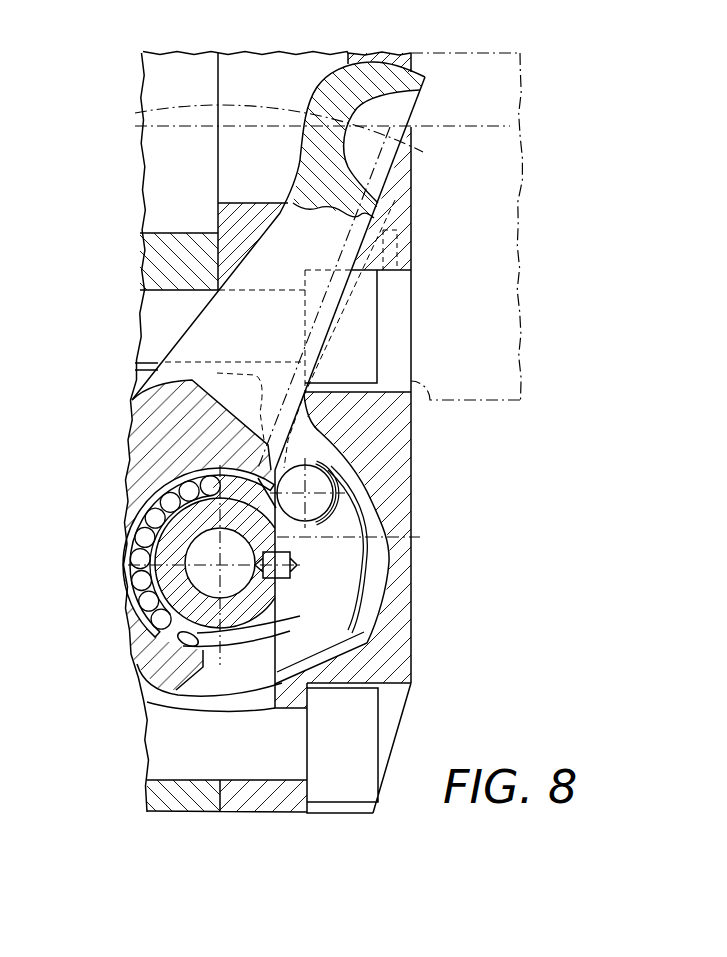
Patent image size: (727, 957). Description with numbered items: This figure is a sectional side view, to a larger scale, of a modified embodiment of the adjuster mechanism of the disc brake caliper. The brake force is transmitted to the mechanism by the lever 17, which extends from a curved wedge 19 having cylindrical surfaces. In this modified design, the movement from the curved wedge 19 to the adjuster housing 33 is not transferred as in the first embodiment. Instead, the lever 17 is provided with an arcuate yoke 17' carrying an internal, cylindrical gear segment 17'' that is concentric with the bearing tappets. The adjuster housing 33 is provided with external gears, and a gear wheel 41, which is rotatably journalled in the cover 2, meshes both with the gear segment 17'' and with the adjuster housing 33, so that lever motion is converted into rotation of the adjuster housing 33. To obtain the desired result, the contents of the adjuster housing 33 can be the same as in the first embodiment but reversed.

The cover 2 is at (411, 457).
The lever 17 is at (248, 266).
The curved wedge 19 is at (158, 470).
The gear wheel 41 is at (413, 492).
The arcuate yoke 17' is at (374, 512).
The gear segment 17'' is at (381, 621).
The adjuster housing 33 is at (297, 552).